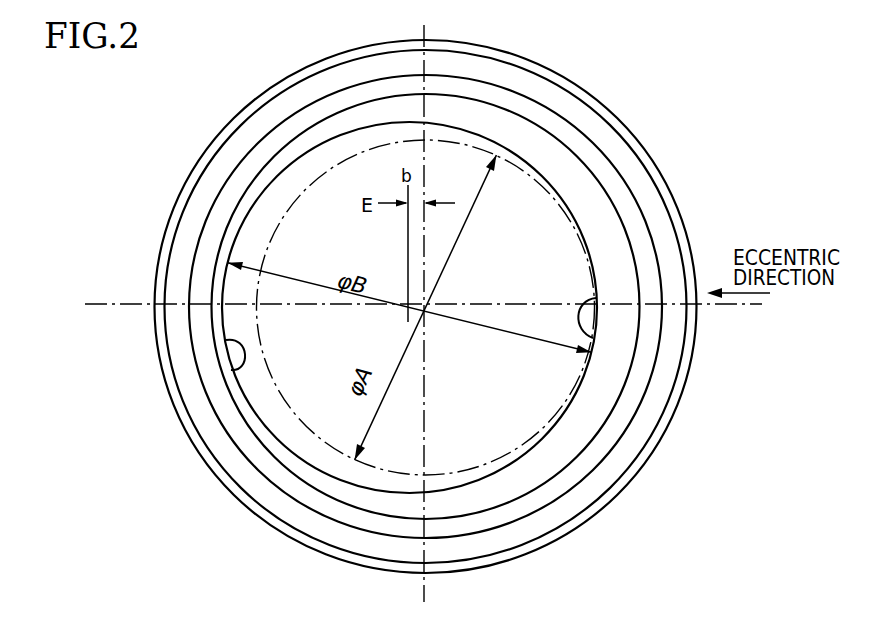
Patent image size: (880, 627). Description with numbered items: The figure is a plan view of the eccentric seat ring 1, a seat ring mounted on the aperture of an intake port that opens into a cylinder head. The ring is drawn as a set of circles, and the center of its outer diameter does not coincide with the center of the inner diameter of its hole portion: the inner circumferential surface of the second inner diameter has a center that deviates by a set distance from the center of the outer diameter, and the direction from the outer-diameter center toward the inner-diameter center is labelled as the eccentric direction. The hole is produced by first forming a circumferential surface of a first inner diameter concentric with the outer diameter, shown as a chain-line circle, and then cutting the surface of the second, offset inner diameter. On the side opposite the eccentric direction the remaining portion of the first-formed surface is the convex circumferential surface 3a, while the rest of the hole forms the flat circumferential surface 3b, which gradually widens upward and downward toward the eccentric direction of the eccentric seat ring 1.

The eccentric seat ring 1 is at (688, 80).
The convex circumferential surface 3a is at (593, 338).
The flat circumferential surface 3b is at (231, 370).